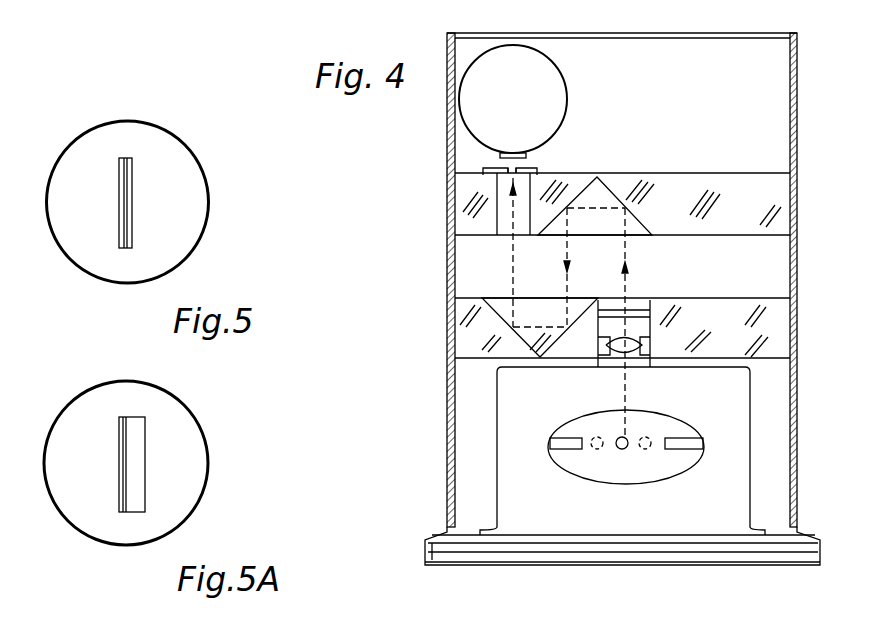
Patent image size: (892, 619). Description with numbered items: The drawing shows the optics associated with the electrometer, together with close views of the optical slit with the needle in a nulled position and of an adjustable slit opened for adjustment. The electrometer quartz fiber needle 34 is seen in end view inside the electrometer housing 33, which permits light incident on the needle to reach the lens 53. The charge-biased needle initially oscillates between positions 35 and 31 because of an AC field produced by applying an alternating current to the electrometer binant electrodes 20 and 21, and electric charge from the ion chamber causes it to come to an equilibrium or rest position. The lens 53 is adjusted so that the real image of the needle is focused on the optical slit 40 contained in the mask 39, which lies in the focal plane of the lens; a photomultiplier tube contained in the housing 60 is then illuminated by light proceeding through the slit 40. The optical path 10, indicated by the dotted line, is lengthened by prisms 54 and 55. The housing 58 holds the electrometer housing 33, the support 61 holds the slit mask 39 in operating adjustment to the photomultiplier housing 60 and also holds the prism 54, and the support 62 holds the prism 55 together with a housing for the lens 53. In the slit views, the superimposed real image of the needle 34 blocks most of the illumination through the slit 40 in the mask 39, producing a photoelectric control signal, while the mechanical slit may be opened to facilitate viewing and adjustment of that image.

In FIG. 4, the optical path 10 is at (625, 280).
In FIG. 4, the electrometer binant electrode 20 is at (685, 447).
In FIG. 4, the electrometer binant electrode 21 is at (577, 445).
In FIG. 4, the needle oscillation position 31 is at (593, 438).
In FIG. 4, the electrometer housing 33 is at (737, 468).
In FIG. 4, the quartz fiber needle 34 is at (620, 450).
In FIG. 5, the quartz fiber needle 34 is at (125, 248).
In FIG. 5A, the quartz fiber needle 34 is at (125, 495).
In FIG. 4, the needle oscillation position 35 is at (650, 450).
In FIG. 4, the mask 39 is at (520, 170).
In FIG. 5, the mask 39 is at (190, 177).
In FIG. 5A, the mask 39 is at (187, 430).
In FIG. 4, the optical slit 40 is at (508, 170).
In FIG. 5, the optical slit 40 is at (130, 158).
In FIG. 5A, the optical slit 40 is at (143, 420).
In FIG. 4, the lens 53 is at (635, 355).
In FIG. 4, the prism 54 is at (610, 200).
In FIG. 4, the prism 55 is at (507, 315).
In FIG. 4, the housing 58 is at (447, 260).
In FIG. 4, the photomultiplier housing 60 is at (555, 90).
In FIG. 4, the support 61 is at (695, 178).
In FIG. 4, the support 62 is at (697, 317).